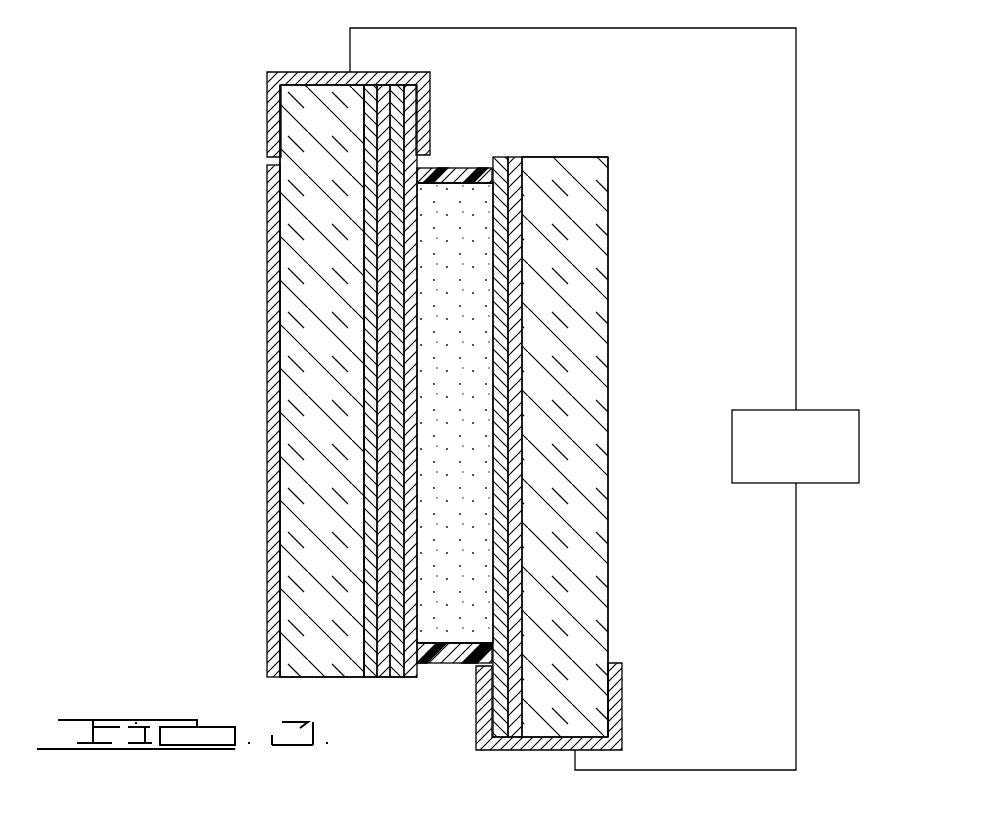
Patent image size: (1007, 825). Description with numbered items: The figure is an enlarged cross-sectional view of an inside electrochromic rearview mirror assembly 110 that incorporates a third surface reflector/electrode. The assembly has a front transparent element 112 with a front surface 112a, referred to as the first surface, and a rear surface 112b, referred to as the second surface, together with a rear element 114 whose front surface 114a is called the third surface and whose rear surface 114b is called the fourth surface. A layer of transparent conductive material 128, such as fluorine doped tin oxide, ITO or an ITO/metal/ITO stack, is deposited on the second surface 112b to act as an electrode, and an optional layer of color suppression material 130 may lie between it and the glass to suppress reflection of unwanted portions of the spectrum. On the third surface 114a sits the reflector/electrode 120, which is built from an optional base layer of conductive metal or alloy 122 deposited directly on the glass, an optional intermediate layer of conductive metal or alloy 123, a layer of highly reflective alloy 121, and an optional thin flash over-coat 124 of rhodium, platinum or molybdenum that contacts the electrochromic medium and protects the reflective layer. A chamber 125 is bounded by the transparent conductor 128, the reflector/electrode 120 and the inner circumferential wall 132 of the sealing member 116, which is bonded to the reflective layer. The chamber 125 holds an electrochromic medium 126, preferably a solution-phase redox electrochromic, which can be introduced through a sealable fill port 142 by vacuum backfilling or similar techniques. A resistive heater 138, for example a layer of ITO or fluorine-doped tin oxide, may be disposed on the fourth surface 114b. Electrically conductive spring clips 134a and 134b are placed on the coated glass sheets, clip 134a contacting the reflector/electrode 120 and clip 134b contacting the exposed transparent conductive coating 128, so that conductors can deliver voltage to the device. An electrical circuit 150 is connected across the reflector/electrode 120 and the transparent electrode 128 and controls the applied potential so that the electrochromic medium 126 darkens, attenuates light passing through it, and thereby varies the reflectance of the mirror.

The mirror assembly 110 is at (194, 236).
The front transparent element 112 is at (580, 236).
The front surface of front transparent element 112a is at (608, 350).
The rear surface of front transparent element 112b is at (523, 186).
The rear element 114 is at (300, 588).
The front surface of rear element 114a is at (370, 531).
The rear surface of rear element 114b is at (280, 638).
The sealing member 116 is at (470, 182).
The reflector/electrode 120 is at (418, 688).
The layer of highly reflective alloy 121 is at (397, 462).
The base layer of conductive metal or alloy 122 is at (370, 349).
The intermediate layer of conductive metal or alloy 123 is at (384, 412).
The flash over-coat 124 is at (414, 600).
The chamber 125 is at (472, 530).
The electrochromic medium 126 is at (470, 596).
The transparent conductive material 128 is at (503, 160).
The color suppression material 130 is at (523, 160).
The inner circumferential wall of sealing member 132 is at (447, 188).
The spring clip 134a is at (278, 95).
The spring clip 134b is at (622, 710).
The resistive heater 138 is at (270, 350).
The sealable fill port 142 is at (437, 660).
The electrical circuit 150 is at (826, 405).